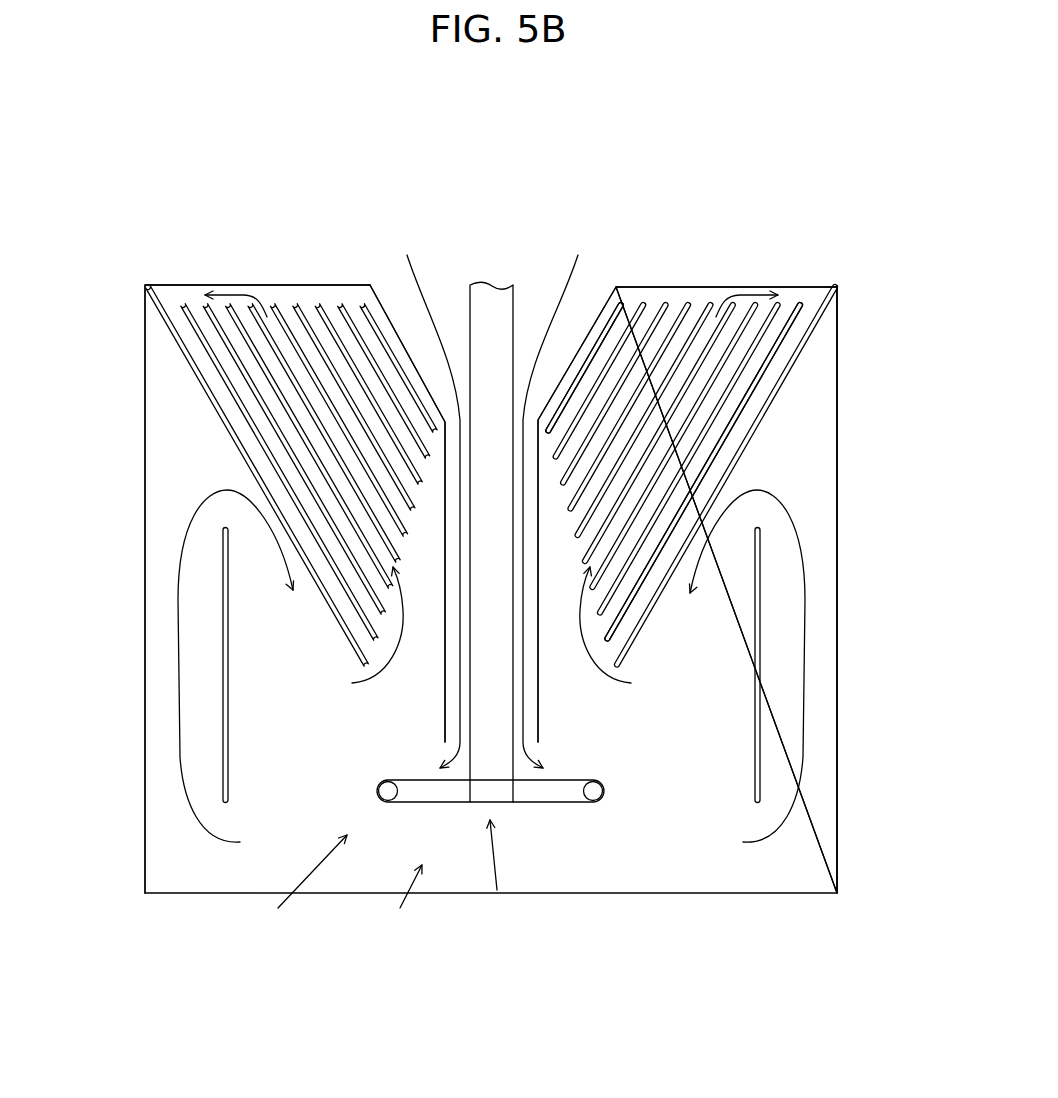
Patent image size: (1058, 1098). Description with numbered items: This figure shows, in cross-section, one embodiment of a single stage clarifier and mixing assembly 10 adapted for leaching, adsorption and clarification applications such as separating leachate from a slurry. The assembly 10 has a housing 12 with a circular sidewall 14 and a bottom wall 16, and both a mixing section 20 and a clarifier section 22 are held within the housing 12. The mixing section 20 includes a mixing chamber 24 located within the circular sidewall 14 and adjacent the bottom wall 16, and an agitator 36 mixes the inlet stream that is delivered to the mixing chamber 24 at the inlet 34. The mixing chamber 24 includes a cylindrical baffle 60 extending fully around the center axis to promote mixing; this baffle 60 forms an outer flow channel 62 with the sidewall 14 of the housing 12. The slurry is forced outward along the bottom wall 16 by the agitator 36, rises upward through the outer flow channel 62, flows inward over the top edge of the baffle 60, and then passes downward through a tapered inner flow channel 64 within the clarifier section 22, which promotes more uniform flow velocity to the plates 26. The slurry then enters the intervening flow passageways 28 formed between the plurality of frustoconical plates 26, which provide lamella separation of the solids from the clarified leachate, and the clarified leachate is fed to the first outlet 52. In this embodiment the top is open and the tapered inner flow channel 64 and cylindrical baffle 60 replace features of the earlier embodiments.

The single stage clarifier and mixing assembly 10 is at (282, 190).
The housing 12 is at (837, 893).
The circular sidewall 14 is at (838, 660).
The bottom wall 16 is at (680, 893).
The mixing section 20 is at (278, 908).
The clarifier section 22 is at (198, 442).
The mixing chamber 24 is at (400, 908).
The frustoconical plates 26 is at (614, 323).
The intervening flow passageways 28 is at (635, 313).
The inlet 34 is at (529, 695).
The agitator 36 is at (497, 890).
The first outlet 52 is at (172, 285).
The cylindrical baffle 60 is at (222, 752).
The outer flow channel 62 is at (198, 638).
The inner flow channel 64 is at (492, 511).